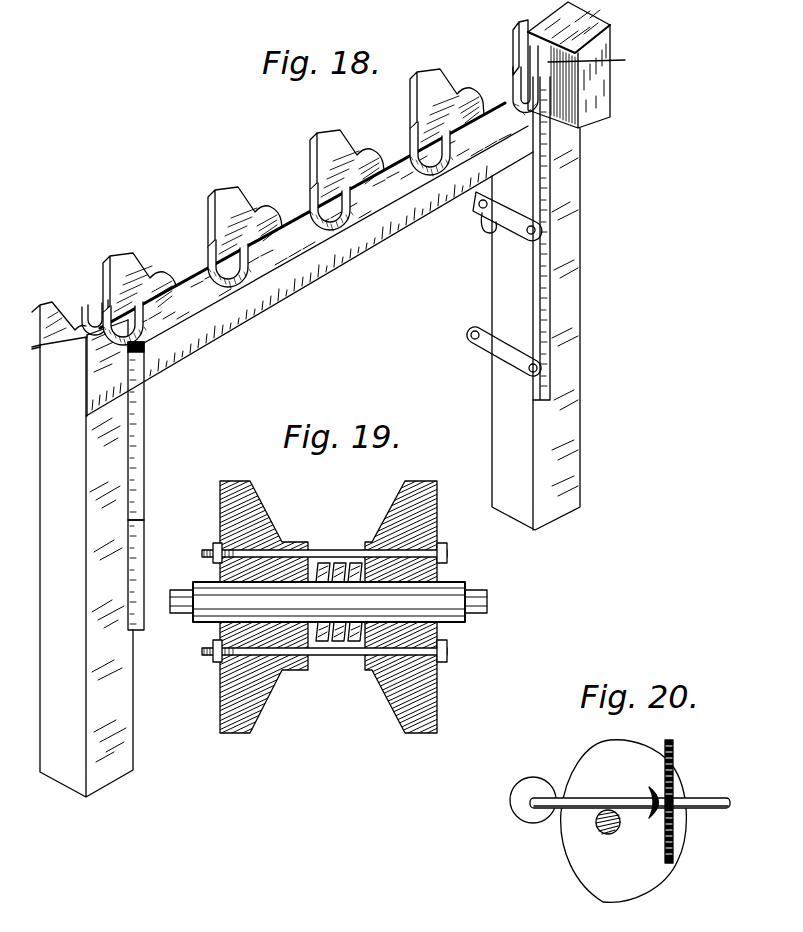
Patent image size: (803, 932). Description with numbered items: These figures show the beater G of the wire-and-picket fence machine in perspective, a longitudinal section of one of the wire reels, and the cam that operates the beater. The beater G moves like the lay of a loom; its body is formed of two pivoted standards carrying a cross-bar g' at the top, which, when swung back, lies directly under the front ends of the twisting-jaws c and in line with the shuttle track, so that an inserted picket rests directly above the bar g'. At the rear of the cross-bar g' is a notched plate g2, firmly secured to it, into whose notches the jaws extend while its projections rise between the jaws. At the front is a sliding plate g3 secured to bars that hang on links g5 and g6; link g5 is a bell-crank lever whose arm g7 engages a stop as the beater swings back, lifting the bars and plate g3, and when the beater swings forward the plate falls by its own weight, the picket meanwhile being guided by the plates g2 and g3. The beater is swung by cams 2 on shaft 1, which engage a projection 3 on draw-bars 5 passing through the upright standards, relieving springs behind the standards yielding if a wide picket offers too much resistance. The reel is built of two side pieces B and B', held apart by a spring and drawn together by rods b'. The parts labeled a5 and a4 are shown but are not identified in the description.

In FIG. 18, the beater G is at (306, 437).
In FIG. 18, the end block a5 is at (610, 25).
In FIG. 18, the notched plate g2 is at (55, 307).
In FIG. 18, the cross-bar g' is at (307, 192).
In FIG. 18, the sliding plate g3 is at (491, 89).
In FIG. 18, the link g5 is at (146, 460).
In FIG. 18, the link g6 is at (146, 590).
In FIG. 18, the arm g7 is at (488, 235).
In FIG. 19, the reel part B is at (328, 605).
In FIG. 19, the reel part B' is at (420, 606).
In FIG. 19, the rod b' is at (324, 599).
In FIG. 19, the twisting-jaw c is at (327, 641).
In FIG. 20, the shaft 1 is at (610, 830).
In FIG. 20, the cam 2 is at (624, 821).
In FIG. 20, the projection 3 is at (523, 813).
In FIG. 20, the draw-bar 5 is at (591, 801).
In FIG. 20, the bar a4 is at (673, 834).